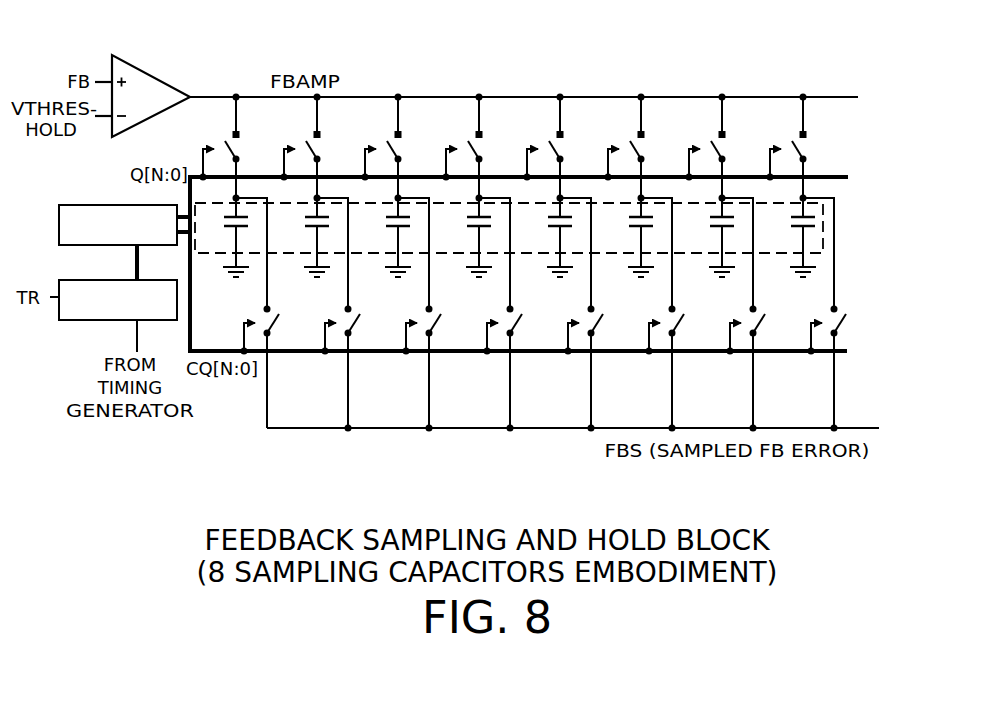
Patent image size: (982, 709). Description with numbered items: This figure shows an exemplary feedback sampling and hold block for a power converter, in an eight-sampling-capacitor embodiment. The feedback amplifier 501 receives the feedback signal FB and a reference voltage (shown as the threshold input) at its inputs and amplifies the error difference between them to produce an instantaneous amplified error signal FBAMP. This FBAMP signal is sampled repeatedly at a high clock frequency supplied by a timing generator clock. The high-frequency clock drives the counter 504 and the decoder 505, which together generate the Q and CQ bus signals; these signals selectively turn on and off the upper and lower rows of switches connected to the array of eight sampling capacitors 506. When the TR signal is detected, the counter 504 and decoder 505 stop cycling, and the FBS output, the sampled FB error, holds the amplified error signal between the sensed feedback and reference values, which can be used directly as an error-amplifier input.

The feedback amplifier 501 is at (153, 73).
The counter 504 is at (97, 280).
The decoder 505 is at (98, 205).
The sampling capacitors 506 is at (527, 204).